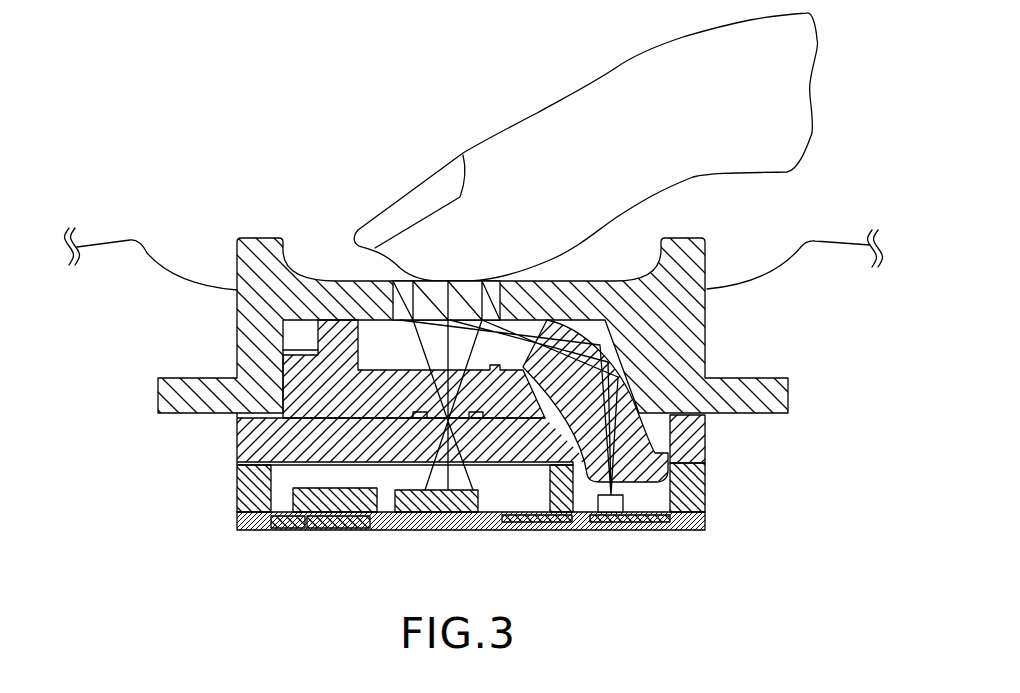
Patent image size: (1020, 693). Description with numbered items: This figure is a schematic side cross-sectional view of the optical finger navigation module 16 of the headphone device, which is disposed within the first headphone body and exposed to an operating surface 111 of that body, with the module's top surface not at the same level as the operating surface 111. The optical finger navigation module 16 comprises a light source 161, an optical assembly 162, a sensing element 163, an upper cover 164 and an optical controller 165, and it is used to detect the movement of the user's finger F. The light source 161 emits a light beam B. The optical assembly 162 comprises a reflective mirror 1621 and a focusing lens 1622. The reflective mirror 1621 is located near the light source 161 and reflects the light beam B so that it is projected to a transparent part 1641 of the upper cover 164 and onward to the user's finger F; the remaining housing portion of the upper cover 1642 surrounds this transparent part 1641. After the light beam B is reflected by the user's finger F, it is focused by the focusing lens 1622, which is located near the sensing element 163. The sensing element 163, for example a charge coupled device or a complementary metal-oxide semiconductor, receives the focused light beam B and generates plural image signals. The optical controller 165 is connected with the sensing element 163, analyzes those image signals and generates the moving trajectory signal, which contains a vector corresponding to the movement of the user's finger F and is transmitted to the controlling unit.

The optical finger navigation module 16 is at (693, 228).
The operating surface 111 is at (112, 240).
The upper cover 164 is at (473, 304).
The transparent part 1641 is at (398, 296).
The cover housing portion 1642 is at (297, 228).
The optical assembly 162 is at (546, 447).
The reflective mirror 1621 is at (655, 412).
The focusing lens 1622 is at (423, 393).
The optical controller 165 is at (378, 530).
The sensing element 163 is at (477, 525).
The light source 161 is at (647, 528).
The light beam B is at (615, 503).
The user's finger F is at (540, 137).